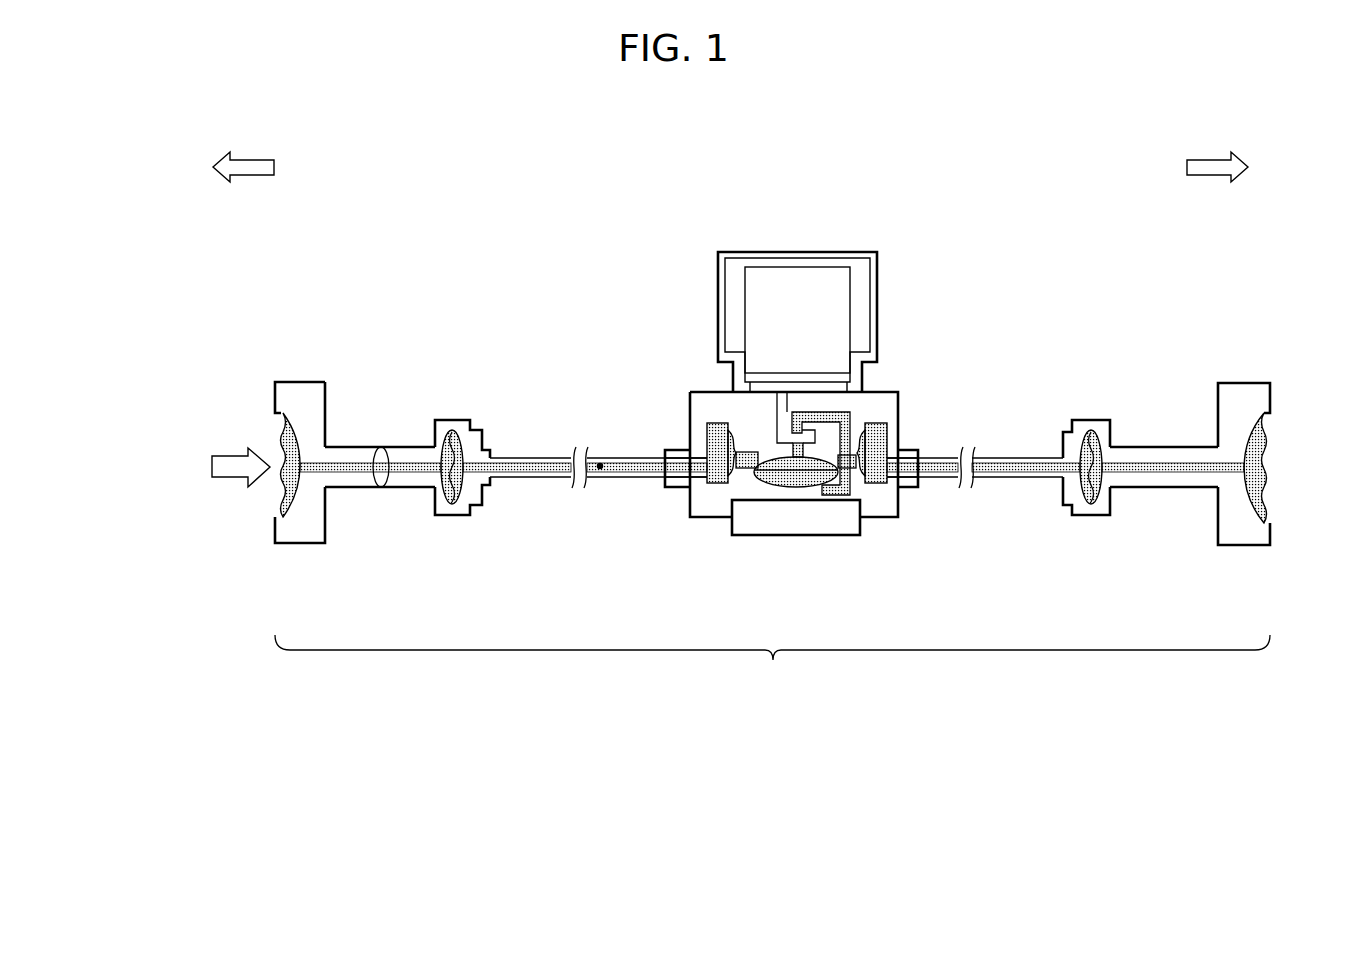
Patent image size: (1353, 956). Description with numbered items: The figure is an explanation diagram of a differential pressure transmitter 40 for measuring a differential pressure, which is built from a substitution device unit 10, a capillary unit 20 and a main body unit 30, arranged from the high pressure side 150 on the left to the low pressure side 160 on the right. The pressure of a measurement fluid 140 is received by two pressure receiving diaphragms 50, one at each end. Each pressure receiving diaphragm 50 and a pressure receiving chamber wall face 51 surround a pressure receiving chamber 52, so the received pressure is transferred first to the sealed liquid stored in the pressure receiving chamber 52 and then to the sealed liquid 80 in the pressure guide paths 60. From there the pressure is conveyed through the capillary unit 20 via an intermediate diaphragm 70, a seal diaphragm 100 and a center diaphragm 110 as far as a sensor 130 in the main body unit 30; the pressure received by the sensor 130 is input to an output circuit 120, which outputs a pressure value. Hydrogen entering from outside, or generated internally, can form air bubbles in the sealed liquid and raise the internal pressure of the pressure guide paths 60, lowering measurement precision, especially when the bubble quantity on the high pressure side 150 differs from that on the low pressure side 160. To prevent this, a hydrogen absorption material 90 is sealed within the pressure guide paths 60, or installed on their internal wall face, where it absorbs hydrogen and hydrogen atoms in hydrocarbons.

The substitution device unit 10 is at (1261, 582).
The capillary unit 20 is at (1081, 582).
The main body unit 30 is at (891, 582).
The differential pressure transmitter 40 is at (772, 660).
The pressure receiving diaphragm 50 is at (283, 413).
The pressure receiving chamber wall face 51 is at (300, 510).
The pressure receiving chamber 52 is at (280, 479).
The pressure guide path 60 is at (381, 448).
The intermediate diaphragm 70 is at (449, 432).
The sealed liquid 80 is at (518, 465).
The hydrogen absorption material 90 is at (600, 465).
The seal diaphragm 100 is at (733, 435).
The center diaphragm 110 is at (826, 467).
The output circuit 120 is at (797, 322).
The sensor 130 is at (793, 437).
The measurement fluid 140 is at (170, 488).
The high pressure side 150 is at (247, 142).
The low pressure side 160 is at (1186, 142).